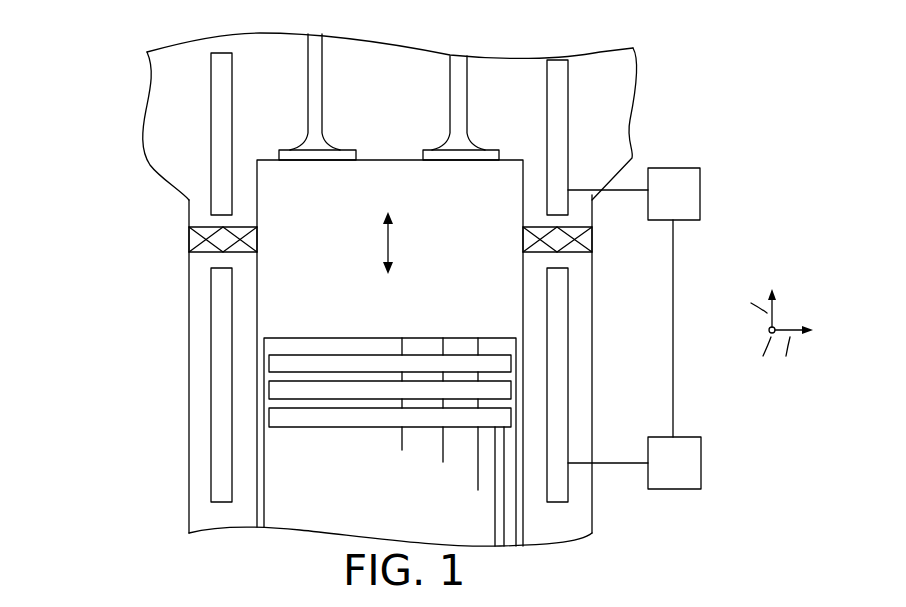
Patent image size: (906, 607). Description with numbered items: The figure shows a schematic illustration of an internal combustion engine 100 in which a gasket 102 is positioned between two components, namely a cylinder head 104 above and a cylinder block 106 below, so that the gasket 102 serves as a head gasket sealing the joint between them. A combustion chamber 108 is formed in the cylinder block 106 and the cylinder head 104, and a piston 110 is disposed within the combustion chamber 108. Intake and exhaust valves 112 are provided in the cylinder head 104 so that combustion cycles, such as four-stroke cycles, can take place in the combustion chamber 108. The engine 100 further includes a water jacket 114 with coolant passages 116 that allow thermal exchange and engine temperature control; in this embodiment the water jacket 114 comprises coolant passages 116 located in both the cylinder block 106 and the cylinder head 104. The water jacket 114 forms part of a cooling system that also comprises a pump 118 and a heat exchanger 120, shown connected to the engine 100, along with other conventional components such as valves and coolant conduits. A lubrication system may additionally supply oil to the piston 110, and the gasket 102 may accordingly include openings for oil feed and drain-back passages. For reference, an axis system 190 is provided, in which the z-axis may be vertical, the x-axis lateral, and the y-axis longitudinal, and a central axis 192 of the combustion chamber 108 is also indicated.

The internal combustion engine 100 is at (90, 41).
The gasket 102 is at (200, 237).
The cylinder head 104 is at (155, 136).
The cylinder block 106 is at (200, 266).
The combustion chamber 108 is at (456, 261).
The piston 110 is at (387, 337).
The intake and exhaust valves 112 is at (317, 88).
The water jacket 114 is at (200, 504).
The coolant passages 116 is at (222, 112).
The pump 118 is at (733, 462).
The heat exchanger 120 is at (700, 203).
The axis system 190 is at (786, 309).
The central axis 192 is at (385, 243).